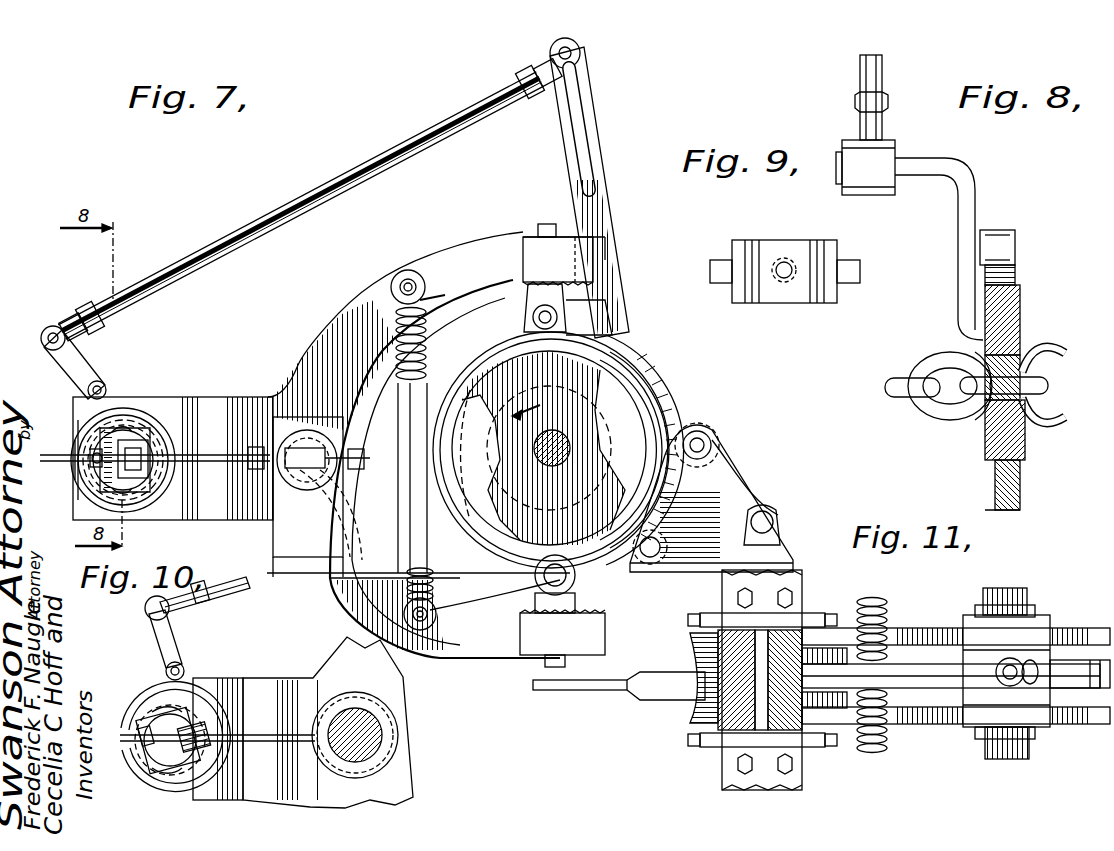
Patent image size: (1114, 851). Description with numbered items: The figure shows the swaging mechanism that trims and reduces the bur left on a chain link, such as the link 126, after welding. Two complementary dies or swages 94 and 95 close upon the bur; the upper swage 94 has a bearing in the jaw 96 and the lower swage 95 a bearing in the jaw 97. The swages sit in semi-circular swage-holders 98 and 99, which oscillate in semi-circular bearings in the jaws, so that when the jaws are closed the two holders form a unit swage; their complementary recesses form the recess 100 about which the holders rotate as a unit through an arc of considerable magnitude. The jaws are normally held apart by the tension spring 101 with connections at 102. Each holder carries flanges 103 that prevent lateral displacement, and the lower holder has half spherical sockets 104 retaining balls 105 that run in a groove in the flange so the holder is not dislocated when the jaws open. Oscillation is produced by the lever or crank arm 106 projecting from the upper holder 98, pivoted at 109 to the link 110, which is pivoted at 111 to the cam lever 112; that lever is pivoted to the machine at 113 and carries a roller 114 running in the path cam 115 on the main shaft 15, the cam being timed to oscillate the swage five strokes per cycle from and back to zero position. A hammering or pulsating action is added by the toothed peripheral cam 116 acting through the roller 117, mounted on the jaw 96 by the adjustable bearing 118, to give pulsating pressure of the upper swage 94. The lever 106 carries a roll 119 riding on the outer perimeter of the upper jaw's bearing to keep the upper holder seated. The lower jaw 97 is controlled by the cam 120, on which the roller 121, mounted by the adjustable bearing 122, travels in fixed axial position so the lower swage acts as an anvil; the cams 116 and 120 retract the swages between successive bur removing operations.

In FIG. 7, the main shaft 15 is at (570, 448).
In FIG. 11, the main shaft 15 is at (1030, 600).
In FIG. 7, the swage 94 is at (128, 412).
In FIG. 8, the swage 94 is at (1015, 362).
In FIG. 9, the swage 94 is at (756, 246).
In FIG. 10, the swage 94 is at (150, 720).
In FIG. 7, the swage 95 is at (100, 472).
In FIG. 8, the swage 95 is at (985, 404).
In FIG. 10, the swage 95 is at (140, 760).
In FIG. 7, the jaw 96 is at (210, 405).
In FIG. 8, the jaw 96 is at (1016, 272).
In FIG. 10, the jaw 96 is at (286, 684).
In FIG. 11, the jaw 96 is at (656, 678).
In FIG. 7, the jaw 97 is at (232, 500).
In FIG. 8, the jaw 97 is at (1012, 506).
In FIG. 10, the jaw 97 is at (328, 722).
In FIG. 11, the jaw 97 is at (832, 628).
In FIG. 7, the swage-holder 98 is at (150, 428).
In FIG. 10, the swage-holder 98 is at (140, 724).
In FIG. 7, the swage-holder 99 is at (172, 470).
In FIG. 10, the swage-holder 99 is at (140, 742).
In FIG. 7, the recess 100 is at (162, 446).
In FIG. 7, the tension spring 101 is at (430, 330).
In FIG. 11, the tension spring 101 is at (888, 600).
In FIG. 7, the connections 102 is at (414, 272).
In FIG. 11, the connections 102 is at (889, 626).
In FIG. 7, the flanges 103 is at (88, 432).
In FIG. 8, the flanges 103 is at (1022, 290).
In FIG. 10, the flanges 103 is at (215, 700).
In FIG. 7, the half spherical sockets 104 is at (130, 514).
In FIG. 8, the half spherical sockets 104 is at (990, 478).
In FIG. 10, the half spherical sockets 104 is at (160, 778).
In FIG. 7, the balls 105 is at (100, 498).
In FIG. 8, the balls 105 is at (985, 484).
In FIG. 7, the lever or crank arm 106 is at (78, 362).
In FIG. 8, the lever or crank arm 106 is at (958, 207).
In FIG. 10, the lever or crank arm 106 is at (180, 640).
In FIG. 7, the pivot 109 is at (52, 328).
In FIG. 8, the pivot 109 is at (897, 150).
In FIG. 7, the link 110 is at (374, 162).
In FIG. 8, the link 110 is at (860, 60).
In FIG. 10, the link 110 is at (226, 598).
In FIG. 7, the pivot 111 is at (581, 52).
In FIG. 7, the cam lever 112 is at (603, 205).
In FIG. 7, the pivot 113 is at (655, 558).
In FIG. 7, the roller 114 is at (650, 410).
In FIG. 7, the path cam 115 is at (499, 352).
In FIG. 7, the peripheral cam 116 is at (640, 335).
In FIG. 11, the peripheral cam 116 is at (1100, 690).
In FIG. 7, the roller 117 is at (578, 312).
In FIG. 7, the adjustable bearing 118 is at (522, 282).
In FIG. 11, the adjustable bearing 118 is at (998, 682).
In FIG. 7, the roll 119 is at (106, 390).
In FIG. 8, the roll 119 is at (998, 230).
In FIG. 10, the roll 119 is at (185, 668).
In FIG. 7, the cam 120 is at (492, 530).
In FIG. 11, the cam 120 is at (962, 612).
In FIG. 7, the roller 121 is at (576, 576).
In FIG. 7, the adjustable bearing 122 is at (575, 604).
In FIG. 11, the adjustable bearing 122 is at (1035, 612).
In FIG. 7, the link 126 is at (290, 432).
In FIG. 8, the link 126 is at (950, 378).
In FIG. 10, the link 126 is at (228, 720).